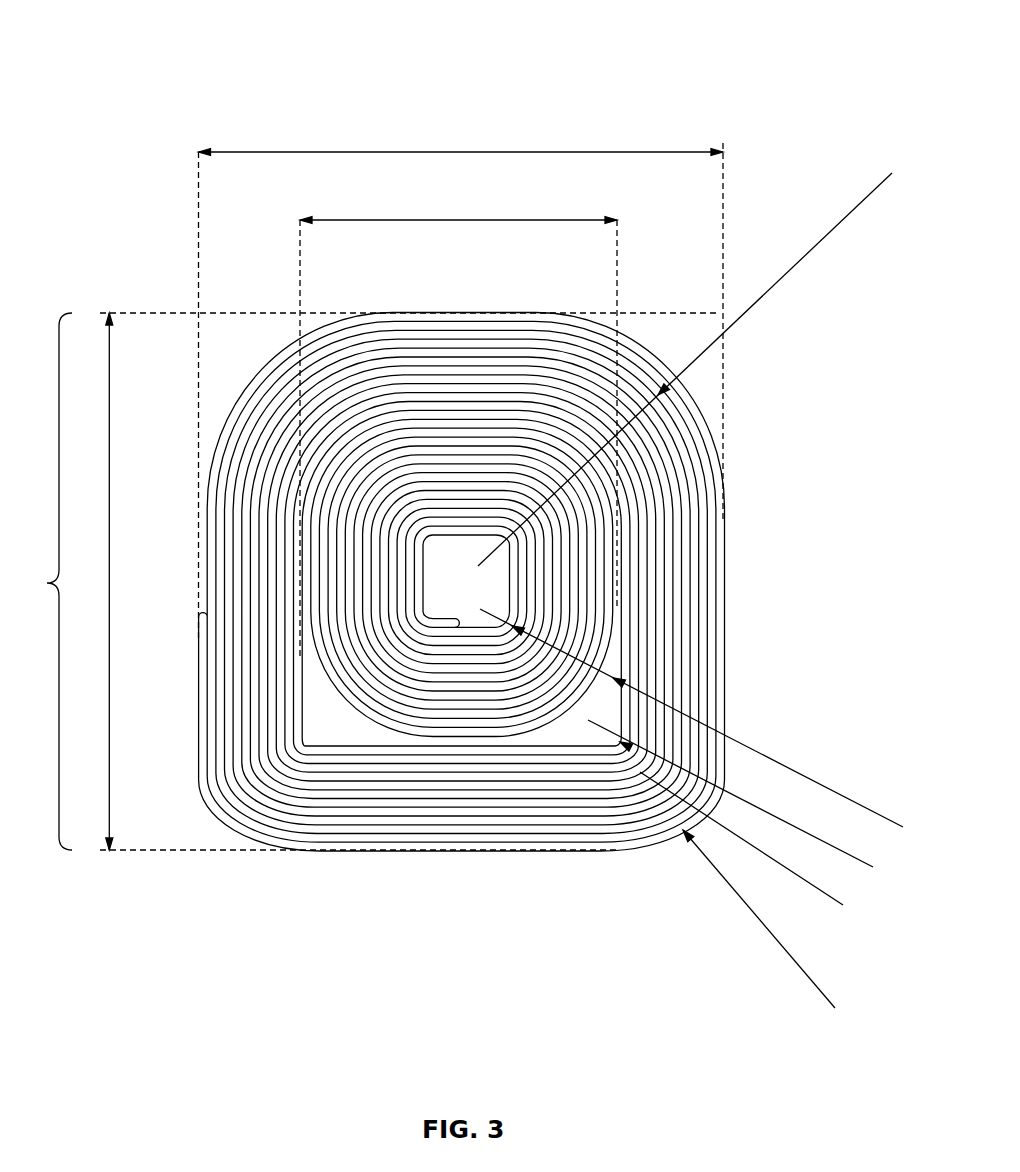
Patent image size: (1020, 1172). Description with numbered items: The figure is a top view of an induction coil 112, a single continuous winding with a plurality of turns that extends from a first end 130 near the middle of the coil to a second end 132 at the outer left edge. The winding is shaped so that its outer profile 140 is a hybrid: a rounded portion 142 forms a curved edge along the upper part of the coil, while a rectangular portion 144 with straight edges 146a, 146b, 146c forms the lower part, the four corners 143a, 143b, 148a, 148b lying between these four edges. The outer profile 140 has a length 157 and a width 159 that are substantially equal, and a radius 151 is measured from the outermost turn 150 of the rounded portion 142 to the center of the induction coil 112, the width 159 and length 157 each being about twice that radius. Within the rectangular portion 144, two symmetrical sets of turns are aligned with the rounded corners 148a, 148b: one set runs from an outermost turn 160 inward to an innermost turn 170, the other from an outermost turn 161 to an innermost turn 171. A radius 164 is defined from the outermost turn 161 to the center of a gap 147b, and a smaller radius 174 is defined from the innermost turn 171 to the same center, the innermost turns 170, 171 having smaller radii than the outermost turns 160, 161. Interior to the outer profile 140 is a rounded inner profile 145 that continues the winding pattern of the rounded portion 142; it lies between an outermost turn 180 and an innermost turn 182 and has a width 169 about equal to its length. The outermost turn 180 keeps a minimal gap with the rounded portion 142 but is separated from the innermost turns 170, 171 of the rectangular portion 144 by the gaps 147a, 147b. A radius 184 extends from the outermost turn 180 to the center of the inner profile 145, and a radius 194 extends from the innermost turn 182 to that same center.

The induction coil 112 is at (104, 52).
The first end 130 is at (440, 618).
The second end 132 is at (200, 622).
The outer profile 140 is at (39, 581).
The rounded portion 142 is at (545, 315).
The corner 143a is at (278, 378).
The corner 143b is at (640, 370).
The rectangular portion 144 is at (470, 852).
The inner profile 145 is at (350, 218).
The straight edge 146a is at (412, 852).
The straight edge 146b is at (200, 668).
The straight edge 146c is at (730, 620).
The gap 147a is at (338, 728).
The gap 147b is at (587, 733).
The rounded corner 148a is at (230, 803).
The rounded corner 148b is at (713, 783).
The outermost turn 150 is at (470, 312).
The radius 151 is at (837, 227).
The length 157 is at (100, 590).
The width 159 is at (588, 143).
The outermost turn 160 is at (212, 787).
The outermost turn 161 is at (670, 828).
The radius 164 is at (757, 917).
The width 169 is at (590, 218).
The innermost turn 170 is at (303, 733).
The innermost turn 171 is at (618, 747).
The radius 174 is at (840, 907).
The outermost turn 180 is at (360, 723).
The innermost turn 182 is at (451, 537).
The radius 184 is at (885, 820).
The radius 194 is at (870, 866).